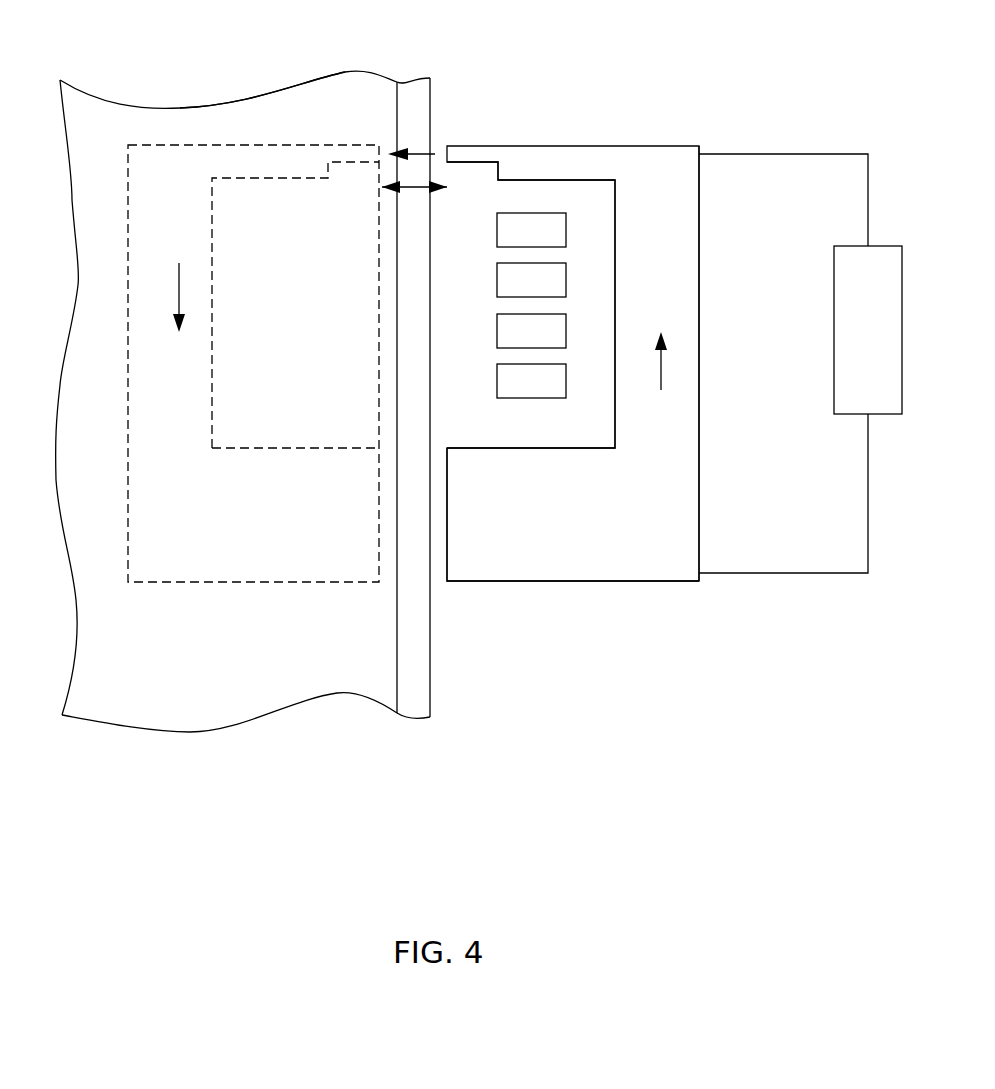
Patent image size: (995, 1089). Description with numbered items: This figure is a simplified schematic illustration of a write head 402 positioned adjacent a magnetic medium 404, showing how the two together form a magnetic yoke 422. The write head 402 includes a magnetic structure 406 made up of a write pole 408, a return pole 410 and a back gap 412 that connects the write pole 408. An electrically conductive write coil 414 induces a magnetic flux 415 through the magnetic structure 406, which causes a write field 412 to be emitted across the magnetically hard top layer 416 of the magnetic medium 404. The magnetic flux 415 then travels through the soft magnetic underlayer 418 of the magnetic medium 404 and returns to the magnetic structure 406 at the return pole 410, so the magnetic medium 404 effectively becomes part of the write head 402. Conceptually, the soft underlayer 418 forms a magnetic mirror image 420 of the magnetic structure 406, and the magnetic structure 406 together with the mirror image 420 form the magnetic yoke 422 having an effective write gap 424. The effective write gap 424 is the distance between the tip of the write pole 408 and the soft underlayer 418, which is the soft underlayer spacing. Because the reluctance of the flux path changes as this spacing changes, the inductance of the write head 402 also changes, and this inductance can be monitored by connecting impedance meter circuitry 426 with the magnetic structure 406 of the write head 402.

The write head 402 is at (645, 140).
The magnetic medium 404 is at (346, 68).
The magnetic structure 406 is at (705, 210).
The write pole 408 is at (466, 160).
The return pole 410 is at (550, 516).
The back gap 412 is at (435, 154).
The write coil 414 is at (531, 305).
The magnetic flux 415 is at (179, 280).
The magnetically hard top layer 416 is at (418, 633).
The soft magnetic underlayer 418 is at (298, 115).
The mirror image 420 is at (145, 302).
The magnetic yoke 422 is at (287, 598).
The effective write gap 424 is at (425, 187).
The impedance meter circuitry 426 is at (834, 336).